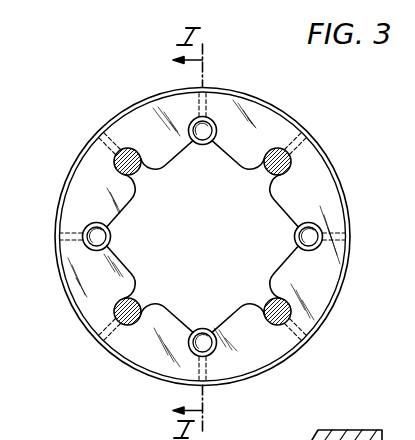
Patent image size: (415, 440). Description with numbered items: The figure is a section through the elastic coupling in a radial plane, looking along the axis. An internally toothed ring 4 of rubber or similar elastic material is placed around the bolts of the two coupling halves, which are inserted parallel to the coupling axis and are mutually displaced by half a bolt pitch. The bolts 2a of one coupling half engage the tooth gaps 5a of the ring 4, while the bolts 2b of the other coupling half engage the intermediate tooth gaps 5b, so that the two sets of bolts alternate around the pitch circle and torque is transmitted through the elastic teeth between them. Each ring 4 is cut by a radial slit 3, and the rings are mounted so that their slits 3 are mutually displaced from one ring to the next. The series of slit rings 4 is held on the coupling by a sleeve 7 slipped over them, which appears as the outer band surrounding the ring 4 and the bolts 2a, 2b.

The bolts 2a is at (87, 242).
The bolts 2b is at (113, 340).
The radial slit 3 is at (205, 106).
The ring 4 is at (93, 182).
The tooth gaps 5a is at (112, 208).
The tooth gaps 5b is at (127, 296).
The sleeve 7 is at (159, 381).